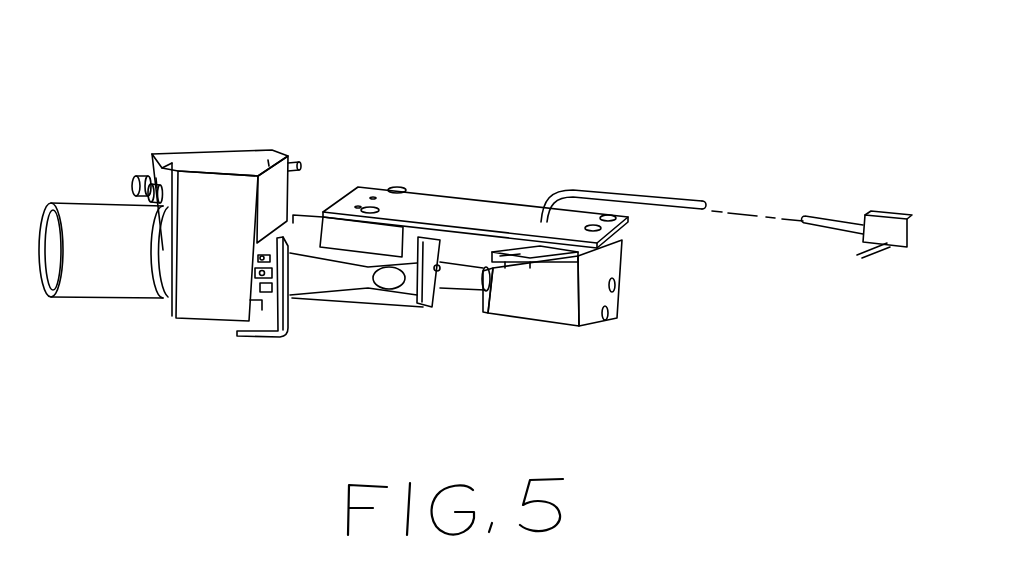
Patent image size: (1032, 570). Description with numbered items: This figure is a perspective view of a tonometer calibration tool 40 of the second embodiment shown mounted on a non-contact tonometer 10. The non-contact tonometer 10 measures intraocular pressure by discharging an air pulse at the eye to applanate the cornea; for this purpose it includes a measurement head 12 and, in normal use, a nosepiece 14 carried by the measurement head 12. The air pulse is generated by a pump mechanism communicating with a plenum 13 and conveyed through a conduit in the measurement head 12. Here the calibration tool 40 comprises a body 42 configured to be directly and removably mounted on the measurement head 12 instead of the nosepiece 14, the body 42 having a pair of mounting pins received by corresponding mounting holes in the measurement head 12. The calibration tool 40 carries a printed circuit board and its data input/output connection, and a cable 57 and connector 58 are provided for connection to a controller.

The non-contact tonometer 10 is at (230, 108).
The measurement head 12 is at (303, 237).
The plenum 13 is at (92, 218).
The nosepiece 14 is at (455, 287).
The tonometer calibration tool 40 is at (545, 172).
The body 42 is at (452, 203).
The cable 57 is at (680, 200).
The connector 58 is at (883, 213).